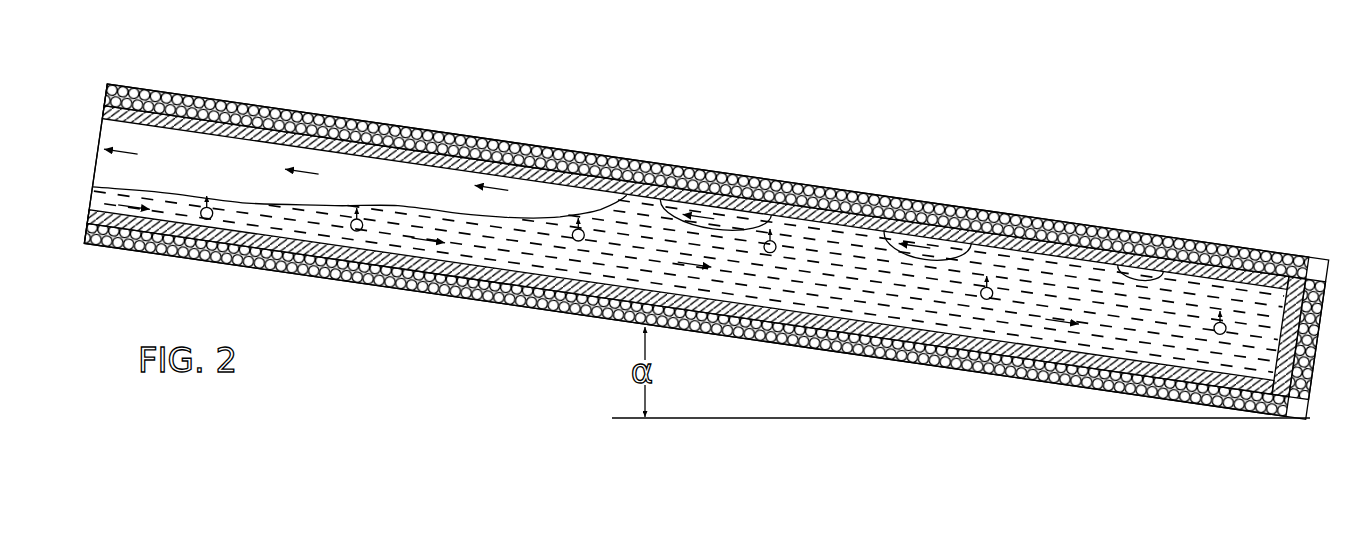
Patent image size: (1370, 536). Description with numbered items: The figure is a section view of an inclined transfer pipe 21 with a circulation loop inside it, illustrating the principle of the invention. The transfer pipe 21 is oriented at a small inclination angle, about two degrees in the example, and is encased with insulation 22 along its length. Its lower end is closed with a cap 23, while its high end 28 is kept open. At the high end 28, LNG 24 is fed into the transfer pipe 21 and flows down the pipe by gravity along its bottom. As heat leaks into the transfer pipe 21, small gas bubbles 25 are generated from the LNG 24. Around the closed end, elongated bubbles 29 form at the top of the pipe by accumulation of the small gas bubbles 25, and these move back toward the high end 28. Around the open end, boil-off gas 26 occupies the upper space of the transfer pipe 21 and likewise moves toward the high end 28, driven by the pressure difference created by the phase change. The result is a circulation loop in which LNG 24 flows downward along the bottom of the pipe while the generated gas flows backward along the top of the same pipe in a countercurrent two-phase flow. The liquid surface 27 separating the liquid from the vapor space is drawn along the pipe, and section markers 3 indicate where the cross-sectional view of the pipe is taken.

The transfer pipe 21 is at (553, 170).
The insulation 22 is at (627, 167).
The cap 23 is at (1320, 312).
The LNG 24 is at (844, 297).
The small gas bubbles 25 is at (357, 218).
The boil-off gas 26 is at (207, 172).
The liquid surface 27 is at (131, 188).
The high end 28 is at (97, 147).
The elongated bubbles 29 is at (730, 217).
The section line 3- 3 is at (441, 120).